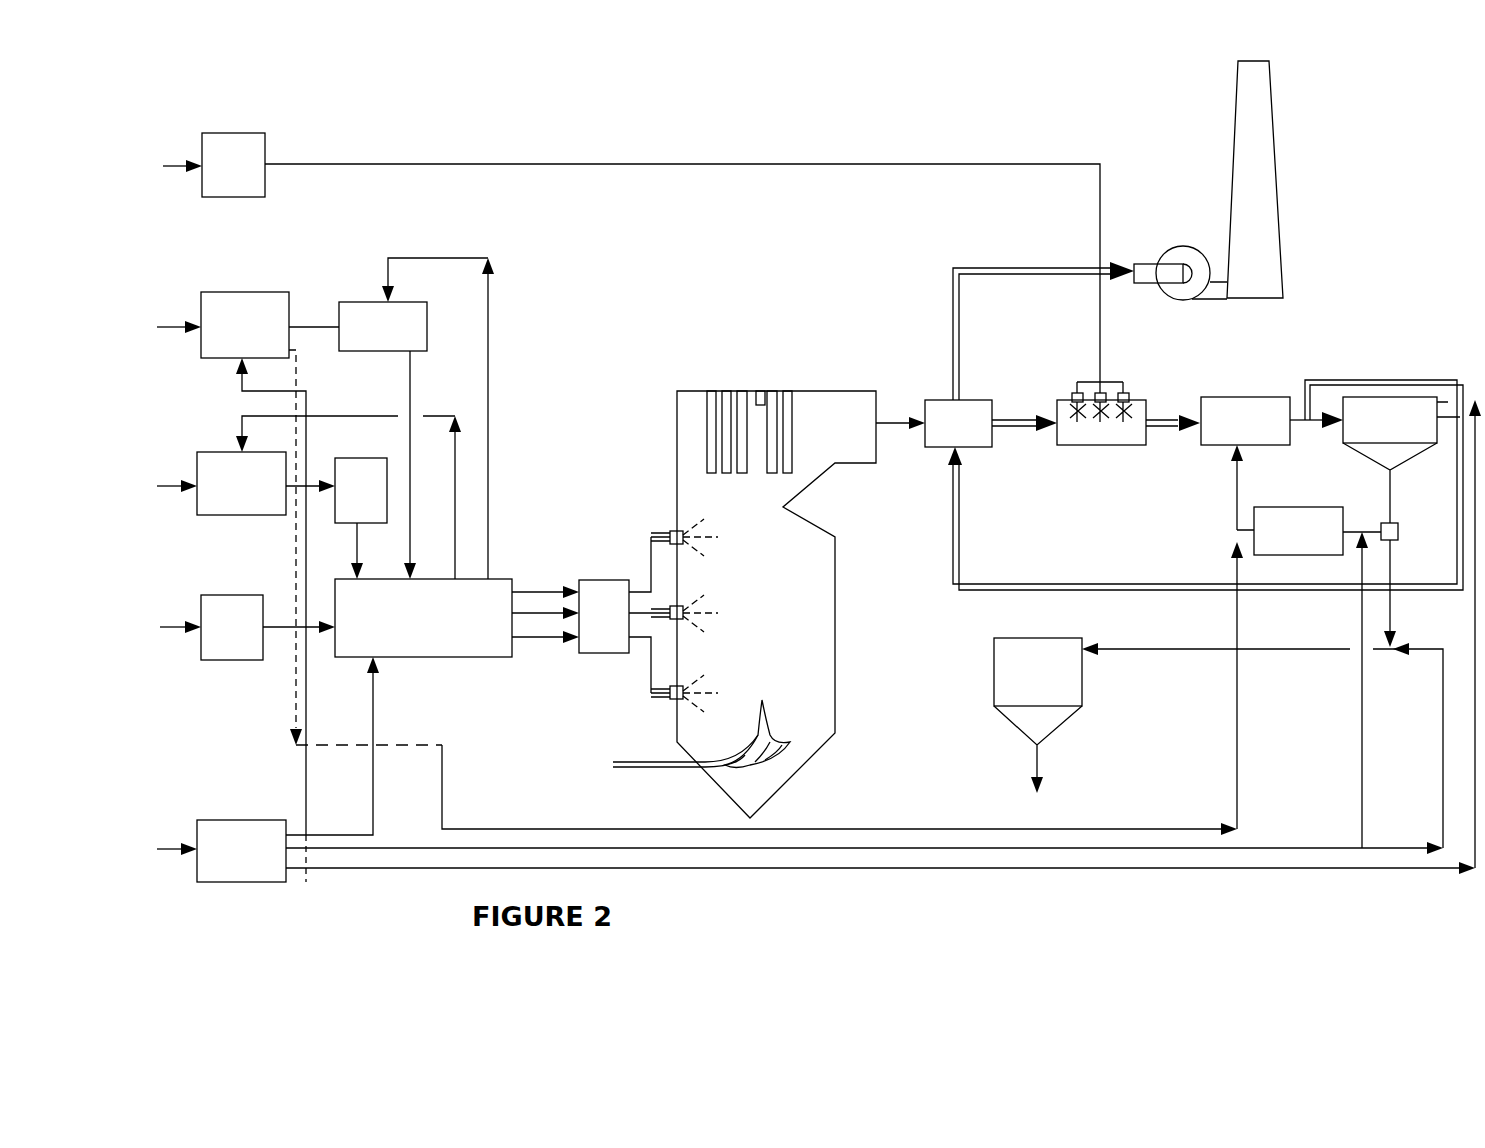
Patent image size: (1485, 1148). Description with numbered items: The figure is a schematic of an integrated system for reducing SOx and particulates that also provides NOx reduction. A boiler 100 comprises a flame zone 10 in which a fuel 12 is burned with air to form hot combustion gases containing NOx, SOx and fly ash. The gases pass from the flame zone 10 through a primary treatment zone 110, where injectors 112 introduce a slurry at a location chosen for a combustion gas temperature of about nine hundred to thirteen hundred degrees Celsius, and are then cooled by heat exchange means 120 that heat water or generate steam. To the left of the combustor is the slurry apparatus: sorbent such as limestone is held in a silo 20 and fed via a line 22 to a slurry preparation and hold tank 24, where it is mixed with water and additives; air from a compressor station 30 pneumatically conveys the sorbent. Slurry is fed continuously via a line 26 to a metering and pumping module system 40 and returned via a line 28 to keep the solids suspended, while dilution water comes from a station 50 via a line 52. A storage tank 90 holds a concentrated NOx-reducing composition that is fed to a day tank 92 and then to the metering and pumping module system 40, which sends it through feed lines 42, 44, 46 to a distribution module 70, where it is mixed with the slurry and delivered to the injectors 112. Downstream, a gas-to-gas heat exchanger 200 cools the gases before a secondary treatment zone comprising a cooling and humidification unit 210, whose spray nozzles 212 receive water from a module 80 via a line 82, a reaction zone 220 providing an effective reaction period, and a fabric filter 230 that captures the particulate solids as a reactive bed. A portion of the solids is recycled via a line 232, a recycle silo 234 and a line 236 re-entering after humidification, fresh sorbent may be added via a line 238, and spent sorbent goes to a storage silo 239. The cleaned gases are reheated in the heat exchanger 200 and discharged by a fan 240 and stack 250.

The flame zone 10 is at (752, 776).
The fuel 12 is at (650, 765).
The silo 20 is at (223, 325).
The line 22 is at (312, 327).
The slurry preparation and hold tank 24 is at (383, 326).
The line 26 is at (455, 416).
The line 28 is at (425, 258).
The compressor station 30 is at (819, 641).
The metering and pumping module system 40 is at (423, 618).
The first feed line to injector 42 is at (552, 592).
The third feed line to injector 44 is at (540, 637).
The second feed line to injector 46 is at (534, 613).
The station 50 is at (211, 627).
The line 52 is at (290, 637).
The distribution module 70 is at (615, 615).
The module 80 is at (214, 165).
The line 82 is at (762, 164).
The storage tank 90 is at (221, 483).
The day tank 92 is at (336, 518).
The boiler 100 is at (700, 358).
The primary treatment zone 110 is at (801, 604).
The injectors 112 is at (769, 537).
The heat exchange means 120 is at (787, 458).
The gas-to-gas heat exchanger 200 is at (1194, 426).
The cooling and humidification unit 210 is at (1090, 437).
The spray nozzles 212 is at (1125, 393).
The reaction zone 220 is at (1272, 421).
The fabric filter 230 is at (1401, 460).
The line 232 is at (1393, 488).
The recycle silo 234 is at (1309, 677).
The line 236 is at (1235, 488).
The line 238 is at (522, 829).
The storage silo 239 is at (1218, 743).
The fan 240 is at (1153, 268).
The stack 250 is at (1255, 179).